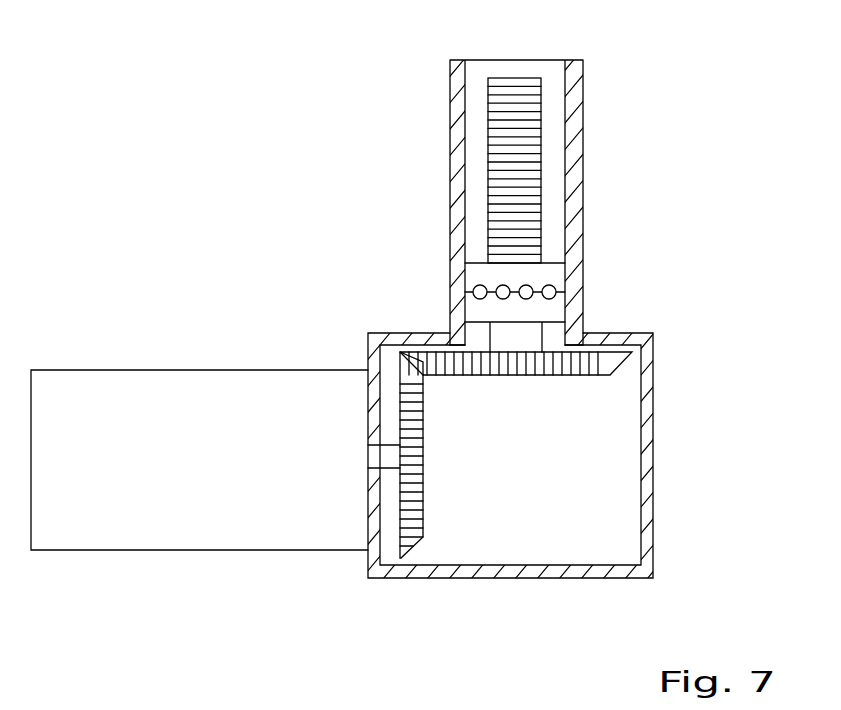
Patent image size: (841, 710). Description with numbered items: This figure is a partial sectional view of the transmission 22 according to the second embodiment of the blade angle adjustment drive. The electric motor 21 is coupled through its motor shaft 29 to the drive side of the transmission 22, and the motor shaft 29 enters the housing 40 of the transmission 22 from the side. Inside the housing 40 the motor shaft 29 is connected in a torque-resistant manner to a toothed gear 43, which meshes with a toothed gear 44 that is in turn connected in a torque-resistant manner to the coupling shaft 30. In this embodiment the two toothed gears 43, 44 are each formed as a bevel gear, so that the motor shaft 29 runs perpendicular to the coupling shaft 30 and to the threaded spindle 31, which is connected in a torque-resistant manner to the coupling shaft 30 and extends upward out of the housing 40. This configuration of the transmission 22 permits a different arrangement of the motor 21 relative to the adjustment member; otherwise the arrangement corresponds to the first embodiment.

The motor 21 is at (268, 382).
The transmission 22 is at (655, 452).
The motor shaft 29 is at (390, 455).
The coupling shaft 30 is at (547, 178).
The threaded spindle 31 is at (522, 83).
The housing 40 is at (460, 578).
The toothed gear 43 is at (418, 497).
The toothed gear 44 is at (548, 373).